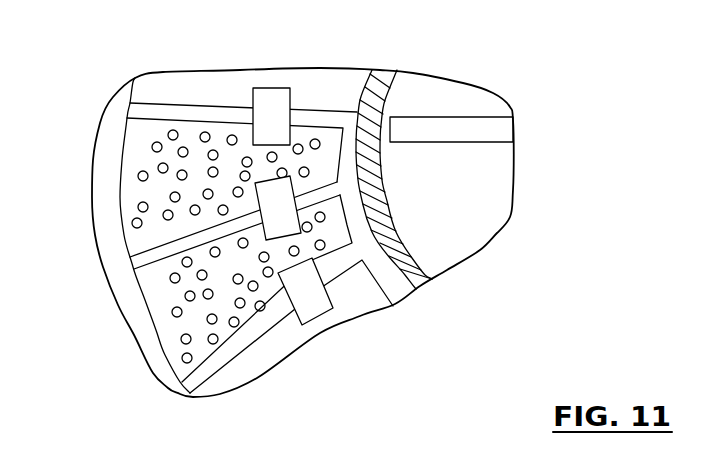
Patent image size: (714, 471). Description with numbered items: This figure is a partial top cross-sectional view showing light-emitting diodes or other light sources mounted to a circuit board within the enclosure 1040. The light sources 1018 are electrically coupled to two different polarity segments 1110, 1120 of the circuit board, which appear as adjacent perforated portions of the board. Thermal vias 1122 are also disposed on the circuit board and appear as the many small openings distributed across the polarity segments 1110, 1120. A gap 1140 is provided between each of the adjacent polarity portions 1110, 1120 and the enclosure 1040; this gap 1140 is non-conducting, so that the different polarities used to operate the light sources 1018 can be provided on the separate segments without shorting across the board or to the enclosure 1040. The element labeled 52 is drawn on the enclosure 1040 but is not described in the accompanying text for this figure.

The strap attachment slot 52 is at (503, 127).
The light sources 1018 is at (274, 94).
The enclosure 1040 is at (400, 70).
The polarity segment 1110 is at (133, 128).
The polarity segment 1120 is at (159, 83).
The thermal vias 1122 is at (138, 177).
The gap 1140 is at (377, 73).